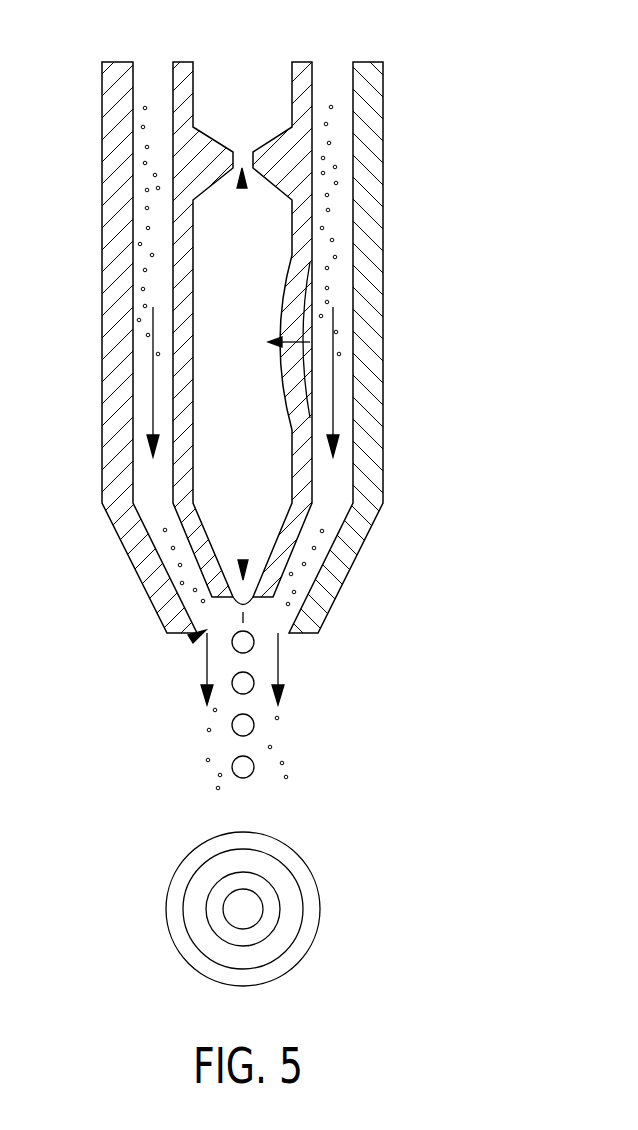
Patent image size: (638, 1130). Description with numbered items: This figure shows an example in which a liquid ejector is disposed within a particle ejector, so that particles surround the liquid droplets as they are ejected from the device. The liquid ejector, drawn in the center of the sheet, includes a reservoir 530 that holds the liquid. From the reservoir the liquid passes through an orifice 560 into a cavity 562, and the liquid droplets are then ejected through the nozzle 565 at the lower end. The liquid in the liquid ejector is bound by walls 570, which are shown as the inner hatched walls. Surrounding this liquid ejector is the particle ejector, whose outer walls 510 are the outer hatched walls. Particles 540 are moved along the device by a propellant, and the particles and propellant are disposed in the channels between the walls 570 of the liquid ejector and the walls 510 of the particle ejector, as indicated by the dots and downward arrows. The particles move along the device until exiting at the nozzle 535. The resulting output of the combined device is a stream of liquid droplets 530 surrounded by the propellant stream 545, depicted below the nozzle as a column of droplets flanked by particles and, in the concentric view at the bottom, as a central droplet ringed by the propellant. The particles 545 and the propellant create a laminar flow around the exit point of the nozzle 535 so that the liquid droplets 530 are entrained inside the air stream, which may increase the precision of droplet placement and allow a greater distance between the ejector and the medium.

The walls of the particle ejector 510 is at (112, 140).
The reservoir / liquid droplets 530 is at (245, 70).
The nozzle of the particle ejector 535 is at (196, 636).
The particles 540 is at (153, 255).
The propellant stream 545 is at (268, 948).
The orifice 560 is at (244, 190).
The cavity 562 is at (258, 410).
The nozzle of the liquid ejector 565 is at (243, 560).
The walls of the liquid ejector 570 is at (187, 70).